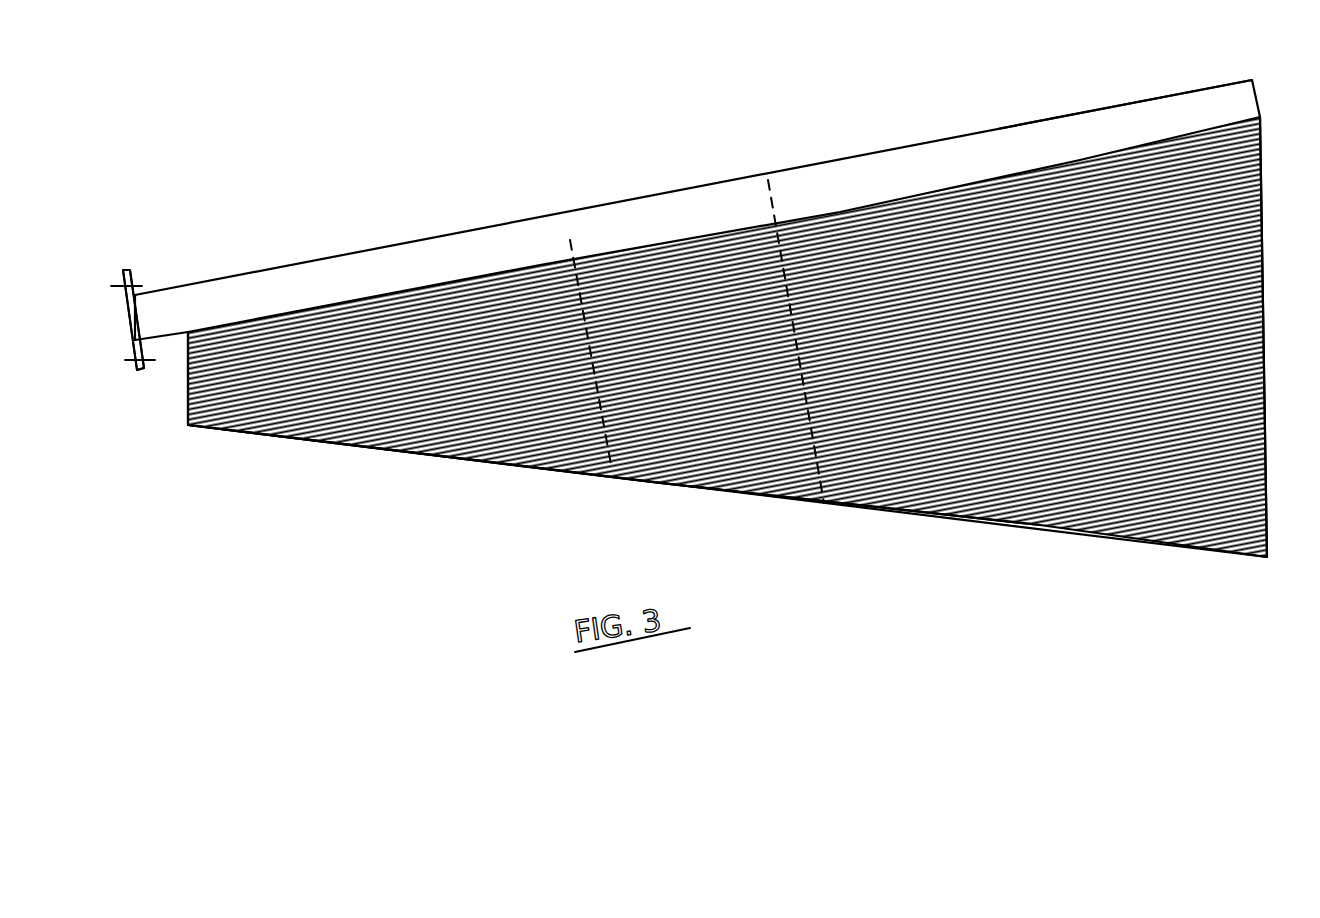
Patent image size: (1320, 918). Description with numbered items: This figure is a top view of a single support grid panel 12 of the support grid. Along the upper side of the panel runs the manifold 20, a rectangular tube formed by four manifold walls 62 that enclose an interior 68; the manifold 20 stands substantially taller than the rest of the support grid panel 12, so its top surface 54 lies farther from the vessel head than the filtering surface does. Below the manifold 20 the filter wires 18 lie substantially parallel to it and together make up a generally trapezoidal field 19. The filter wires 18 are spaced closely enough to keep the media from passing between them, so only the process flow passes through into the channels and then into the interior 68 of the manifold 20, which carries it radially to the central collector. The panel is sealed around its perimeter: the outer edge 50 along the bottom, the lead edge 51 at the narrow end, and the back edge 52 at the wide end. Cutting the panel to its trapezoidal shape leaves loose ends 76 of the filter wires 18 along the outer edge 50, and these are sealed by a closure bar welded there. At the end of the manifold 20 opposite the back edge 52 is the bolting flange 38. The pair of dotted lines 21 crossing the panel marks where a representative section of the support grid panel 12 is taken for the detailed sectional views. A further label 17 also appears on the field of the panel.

The support grid panel 12 is at (262, 563).
The panel face 17 is at (1019, 323).
The filter wires 18 is at (1265, 297).
The trapezoidal field 19 is at (482, 462).
The manifold 20 is at (1137, 100).
The dotted lines 21 is at (570, 233).
The bolting flange 38 is at (126, 270).
The outer edge 50 is at (886, 516).
The lead edge 51 is at (188, 393).
The back edge 52 is at (1265, 202).
The top surface 54 is at (1025, 158).
The manifold walls 62 is at (168, 281).
The interior 68 is at (124, 325).
The loose ends 76 is at (760, 497).